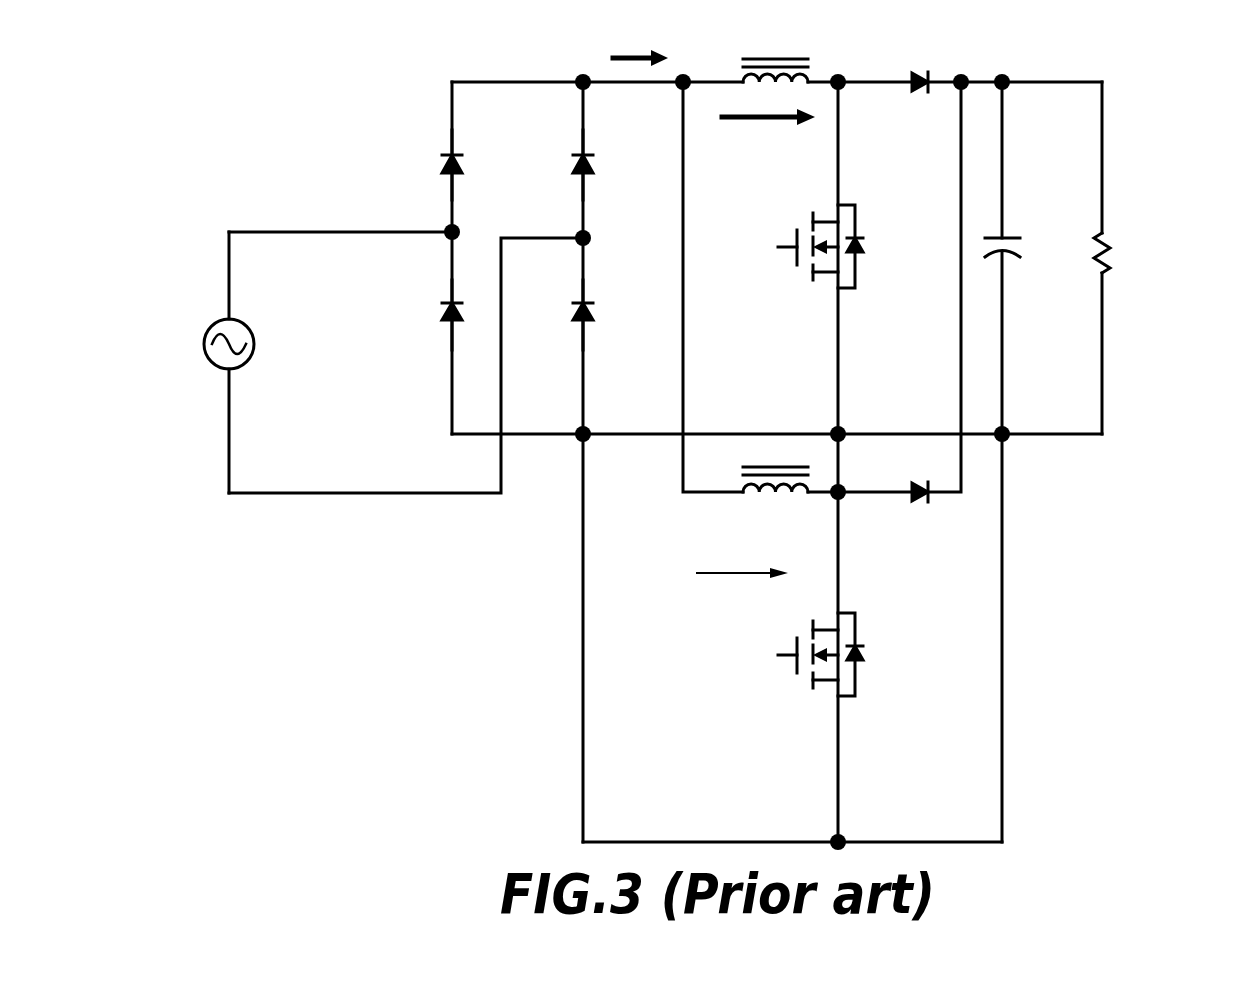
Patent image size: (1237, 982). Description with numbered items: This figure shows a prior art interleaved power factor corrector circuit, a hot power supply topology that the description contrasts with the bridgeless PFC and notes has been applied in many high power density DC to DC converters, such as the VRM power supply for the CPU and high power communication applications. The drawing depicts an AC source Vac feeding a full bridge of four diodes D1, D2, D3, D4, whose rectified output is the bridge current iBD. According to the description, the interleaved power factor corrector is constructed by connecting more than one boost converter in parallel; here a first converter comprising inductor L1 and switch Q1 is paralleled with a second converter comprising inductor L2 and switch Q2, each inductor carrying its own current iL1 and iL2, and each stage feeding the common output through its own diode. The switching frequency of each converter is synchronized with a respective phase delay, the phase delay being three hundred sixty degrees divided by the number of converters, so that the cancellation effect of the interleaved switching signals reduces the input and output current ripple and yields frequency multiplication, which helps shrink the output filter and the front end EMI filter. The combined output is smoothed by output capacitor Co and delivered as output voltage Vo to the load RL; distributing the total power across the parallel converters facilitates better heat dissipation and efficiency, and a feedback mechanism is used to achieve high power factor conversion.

The AC input voltage source Vac is at (197, 362).
The bridge rectifier diode D1 is at (417, 168).
The bridge rectifier diode D2 is at (412, 315).
The bridge rectifier diode D3 is at (551, 168).
The bridge rectifier diode D4 is at (552, 315).
The first boost inductor L1 is at (775, 49).
The second boost inductor L2 is at (775, 461).
The first switching transistor (MOSFET) Q1 is at (854, 285).
The second switching transistor (MOSFET) Q2 is at (848, 674).
The output capacitor Co is at (1032, 291).
The load resistor RL is at (1131, 295).
The output voltage Vo is at (1184, 262).
The bridge diode current iBD is at (611, 42).
The first inductor current iL1 is at (768, 151).
The second inductor current iL2 is at (742, 602).